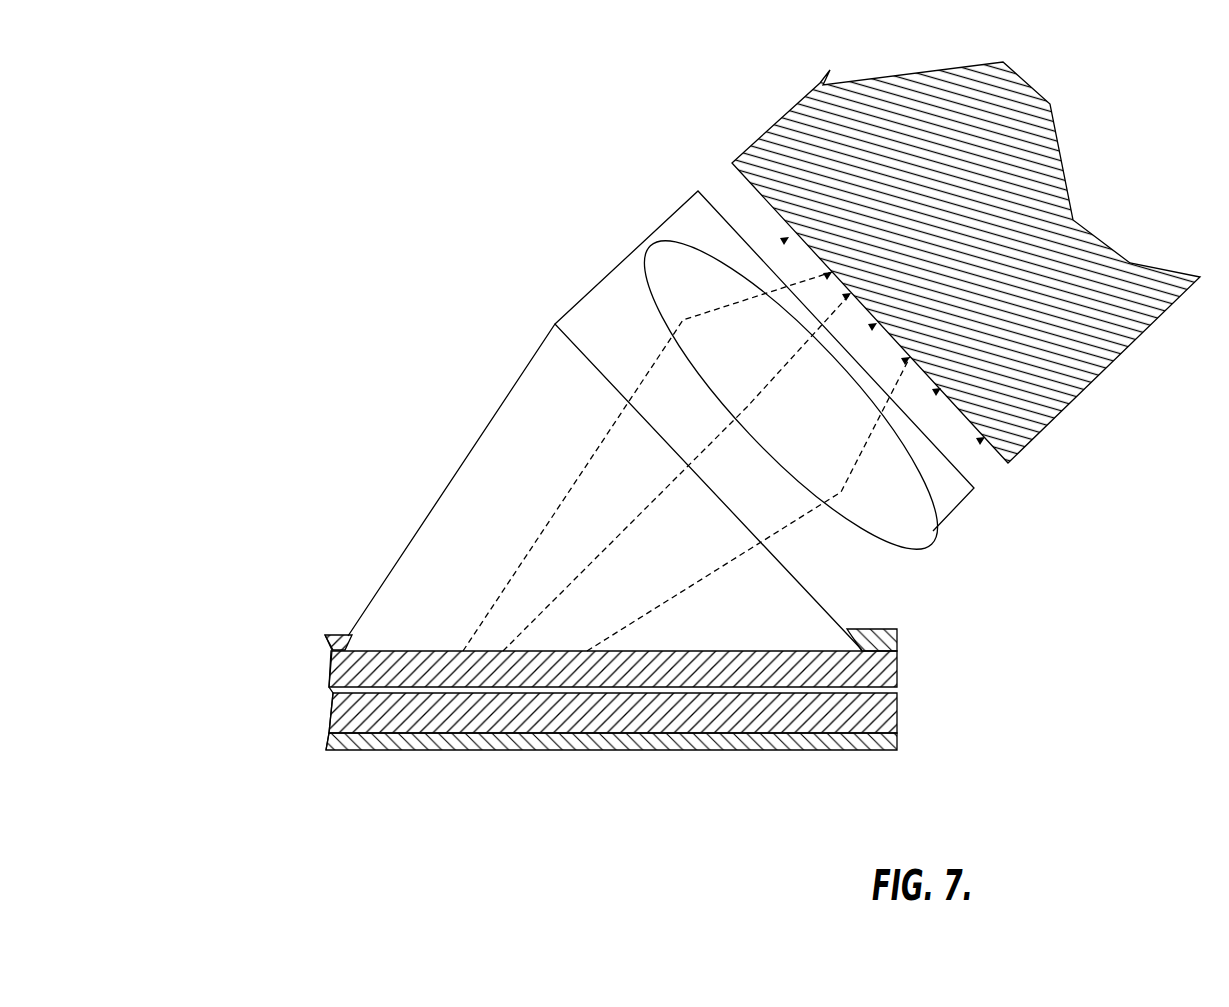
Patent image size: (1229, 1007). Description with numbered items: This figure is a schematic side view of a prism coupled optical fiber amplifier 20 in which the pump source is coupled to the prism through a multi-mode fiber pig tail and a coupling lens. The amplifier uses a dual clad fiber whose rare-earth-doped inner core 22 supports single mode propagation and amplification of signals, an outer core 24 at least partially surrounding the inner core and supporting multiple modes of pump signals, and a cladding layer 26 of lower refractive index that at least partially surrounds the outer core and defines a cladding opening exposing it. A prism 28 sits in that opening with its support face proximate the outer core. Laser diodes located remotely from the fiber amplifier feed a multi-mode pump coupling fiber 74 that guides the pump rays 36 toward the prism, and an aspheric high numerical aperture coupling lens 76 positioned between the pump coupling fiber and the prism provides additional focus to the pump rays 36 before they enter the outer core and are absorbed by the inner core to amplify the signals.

The prism coupled optical fiber amplifier 20 is at (296, 688).
The inner core 22 is at (653, 740).
The outer core 24 is at (530, 718).
The cladding layer 26 is at (433, 748).
The prism 28 is at (455, 475).
The pump rays 36 is at (787, 520).
The multi-mode pump coupling fiber 74 is at (770, 122).
The aspheric high numerical aperture coupling lens 76 is at (657, 233).